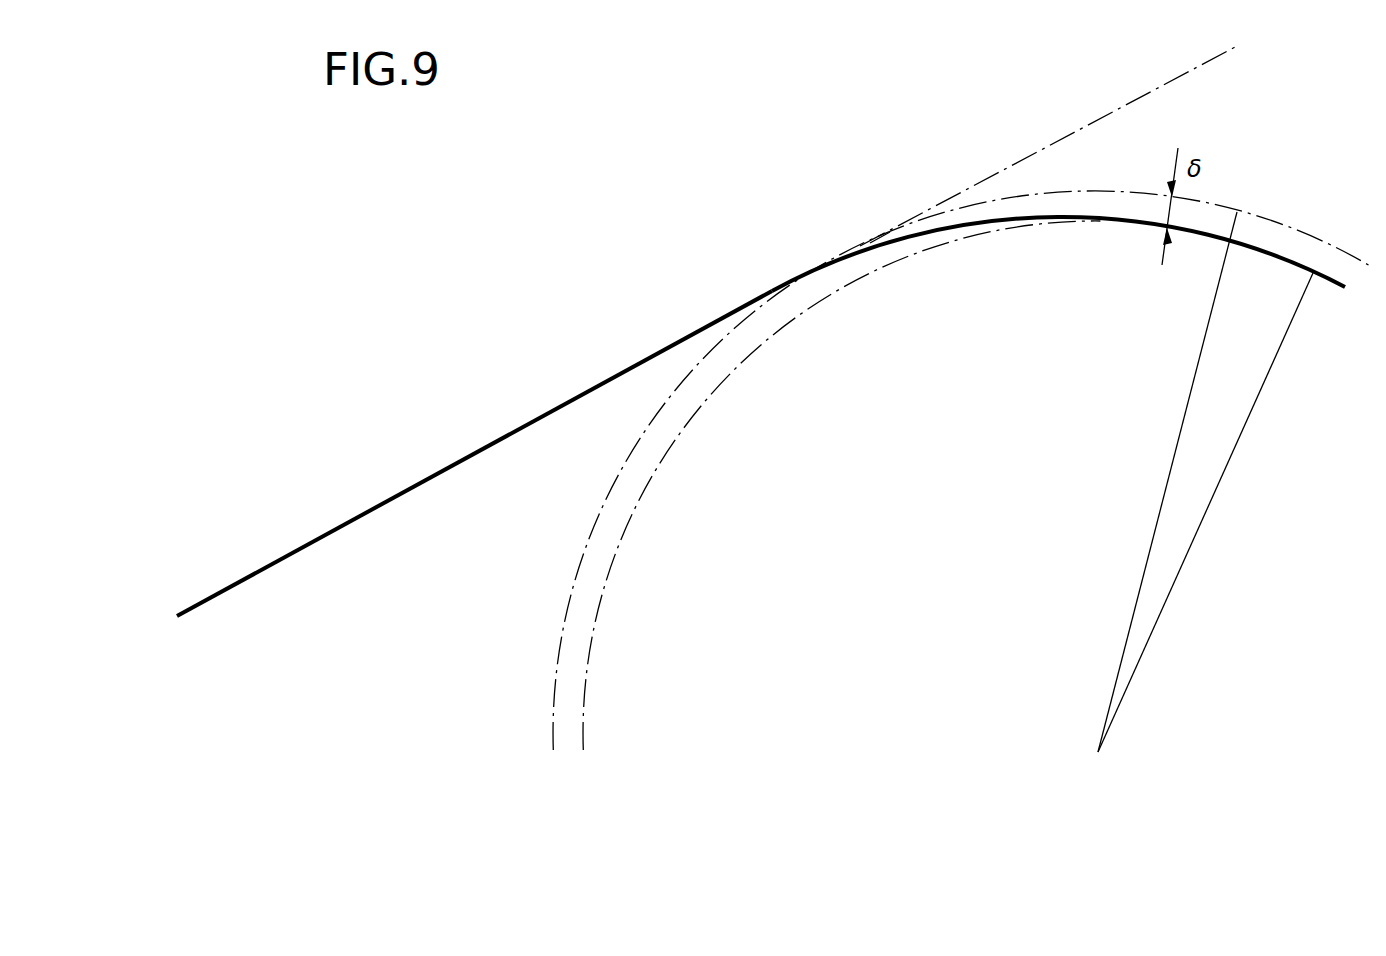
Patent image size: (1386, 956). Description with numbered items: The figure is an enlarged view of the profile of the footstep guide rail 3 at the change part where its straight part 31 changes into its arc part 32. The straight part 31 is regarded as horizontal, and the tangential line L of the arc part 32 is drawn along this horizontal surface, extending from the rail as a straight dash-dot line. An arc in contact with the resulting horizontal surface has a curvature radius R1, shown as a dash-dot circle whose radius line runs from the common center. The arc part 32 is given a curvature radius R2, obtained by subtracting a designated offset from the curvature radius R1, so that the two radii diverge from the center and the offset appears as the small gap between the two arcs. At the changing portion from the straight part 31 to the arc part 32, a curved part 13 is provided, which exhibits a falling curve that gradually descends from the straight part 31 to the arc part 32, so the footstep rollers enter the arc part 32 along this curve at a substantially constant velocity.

The footstep guide rail 3 is at (612, 299).
The curved part 13 is at (885, 240).
The straight part 31 is at (492, 443).
The arc part 32 is at (1098, 217).
The tangential line L is at (1083, 128).
The curvature radius R1 is at (1167, 482).
The curvature radius R2 is at (1215, 512).